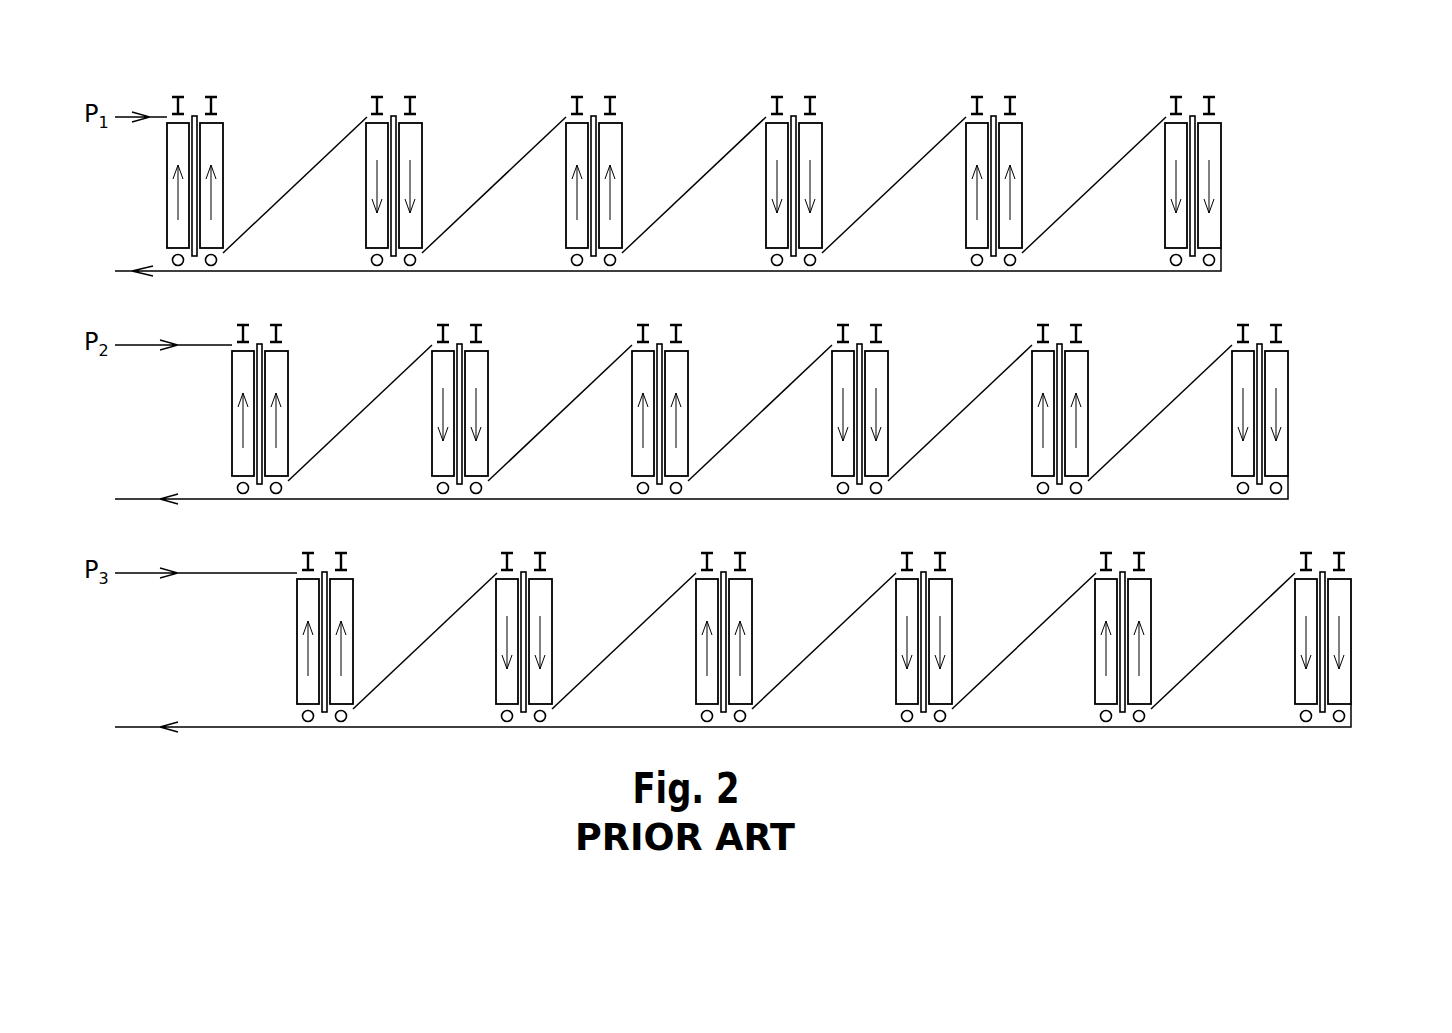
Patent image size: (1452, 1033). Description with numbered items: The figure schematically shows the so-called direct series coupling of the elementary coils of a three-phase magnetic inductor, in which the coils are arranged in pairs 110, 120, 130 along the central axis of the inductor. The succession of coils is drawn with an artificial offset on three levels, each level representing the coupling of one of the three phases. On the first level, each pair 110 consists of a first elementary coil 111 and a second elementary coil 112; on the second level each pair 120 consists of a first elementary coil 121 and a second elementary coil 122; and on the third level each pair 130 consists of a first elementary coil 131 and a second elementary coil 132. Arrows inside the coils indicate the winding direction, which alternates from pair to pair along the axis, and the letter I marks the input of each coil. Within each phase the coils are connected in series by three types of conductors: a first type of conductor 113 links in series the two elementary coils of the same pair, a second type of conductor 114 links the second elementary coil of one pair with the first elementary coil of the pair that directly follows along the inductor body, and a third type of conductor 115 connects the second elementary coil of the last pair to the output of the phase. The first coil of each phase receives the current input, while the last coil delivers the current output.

The pair of elementary coils 110 is at (692, 158).
The first elementary coil 111 is at (167, 145).
The second elementary coil 112 is at (223, 148).
The first type of conductor 113 is at (193, 116).
The second type of conductor 114 is at (280, 200).
The third type of conductor 115 is at (688, 271).
The pair of elementary coils 120 is at (703, 392).
The first elementary coil 121 is at (232, 373).
The second elementary coil 122 is at (288, 388).
The pair of elementary coils 130 is at (735, 620).
The first elementary coil 131 is at (297, 603).
The second elementary coil 132 is at (353, 600).